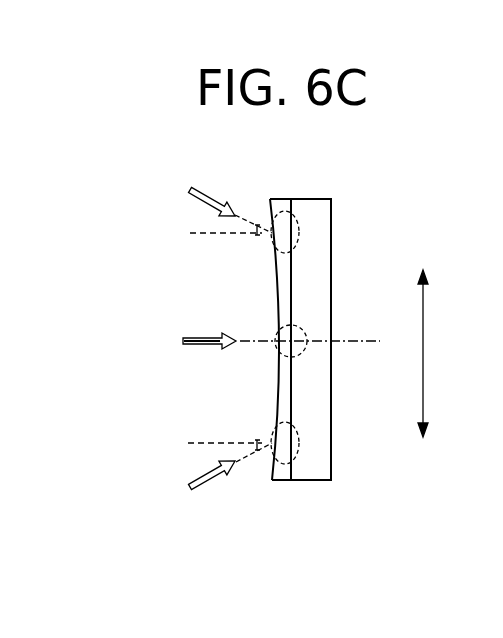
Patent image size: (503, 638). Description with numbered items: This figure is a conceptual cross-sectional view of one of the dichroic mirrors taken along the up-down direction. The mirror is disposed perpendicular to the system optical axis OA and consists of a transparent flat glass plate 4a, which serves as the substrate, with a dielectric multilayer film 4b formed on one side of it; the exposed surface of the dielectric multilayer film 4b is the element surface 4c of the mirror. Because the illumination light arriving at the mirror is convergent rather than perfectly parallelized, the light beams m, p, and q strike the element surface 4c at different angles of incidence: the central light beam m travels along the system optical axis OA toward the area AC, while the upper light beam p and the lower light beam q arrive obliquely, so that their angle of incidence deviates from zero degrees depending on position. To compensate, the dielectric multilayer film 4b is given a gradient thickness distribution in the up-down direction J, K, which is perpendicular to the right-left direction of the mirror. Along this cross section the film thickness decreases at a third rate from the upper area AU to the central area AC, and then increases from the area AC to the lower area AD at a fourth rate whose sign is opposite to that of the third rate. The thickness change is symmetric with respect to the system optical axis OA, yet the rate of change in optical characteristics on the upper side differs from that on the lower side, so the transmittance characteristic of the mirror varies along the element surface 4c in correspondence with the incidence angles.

The transparent flat glass plate 4a is at (318, 482).
The dielectric multilayer film 4b is at (286, 482).
The element surface 4c is at (265, 482).
The area AU is at (298, 222).
The area AC is at (305, 350).
The area AD is at (300, 448).
The system optical axis OA is at (350, 340).
The light beam m is at (205, 349).
The light beam p is at (199, 192).
The light beam q is at (199, 489).
The up direction J is at (434, 346).
The down direction K is at (437, 434).